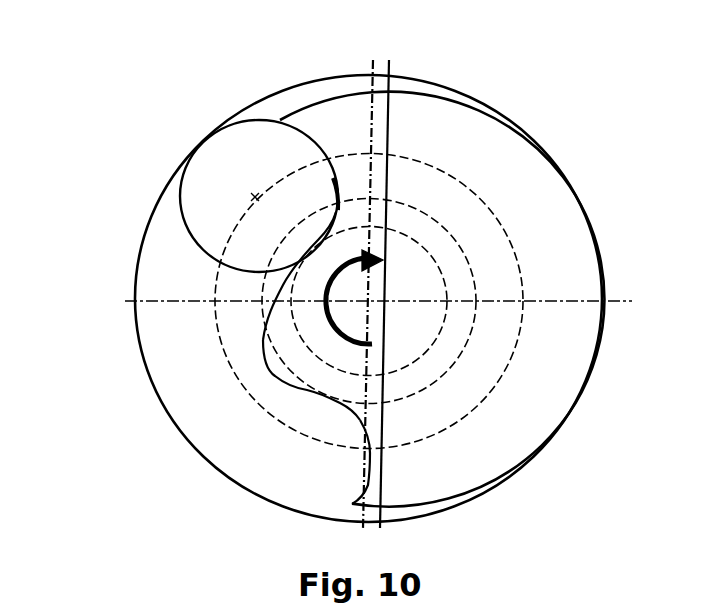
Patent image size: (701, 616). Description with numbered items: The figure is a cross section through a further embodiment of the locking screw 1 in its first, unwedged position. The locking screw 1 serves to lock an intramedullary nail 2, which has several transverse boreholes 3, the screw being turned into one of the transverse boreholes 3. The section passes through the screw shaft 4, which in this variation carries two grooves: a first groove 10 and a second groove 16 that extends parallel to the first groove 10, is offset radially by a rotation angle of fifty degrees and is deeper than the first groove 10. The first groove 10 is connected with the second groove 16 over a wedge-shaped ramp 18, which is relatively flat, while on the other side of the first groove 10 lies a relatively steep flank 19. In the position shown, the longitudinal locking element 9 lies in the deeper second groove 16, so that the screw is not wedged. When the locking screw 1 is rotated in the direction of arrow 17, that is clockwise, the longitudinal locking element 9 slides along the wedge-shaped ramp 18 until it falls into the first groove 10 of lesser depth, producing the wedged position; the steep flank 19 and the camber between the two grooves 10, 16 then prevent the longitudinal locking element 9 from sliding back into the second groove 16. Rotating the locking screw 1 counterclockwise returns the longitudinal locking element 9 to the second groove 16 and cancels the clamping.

The locking screw 1 is at (345, 80).
The intramedullary nail 2 is at (176, 440).
The transverse borehole 3 is at (290, 102).
The screw shaft 4 is at (540, 230).
The longitudinal locking element 9 is at (217, 203).
The first groove 10 is at (353, 412).
The second groove 16 is at (340, 183).
The arrow 17 is at (350, 332).
The wedge-shaped ramp 18 is at (290, 288).
The steep flank 19 is at (290, 387).